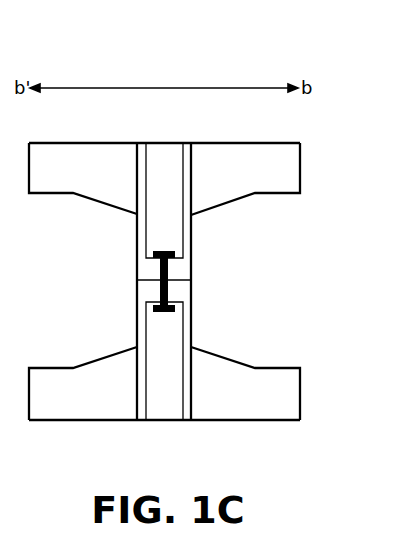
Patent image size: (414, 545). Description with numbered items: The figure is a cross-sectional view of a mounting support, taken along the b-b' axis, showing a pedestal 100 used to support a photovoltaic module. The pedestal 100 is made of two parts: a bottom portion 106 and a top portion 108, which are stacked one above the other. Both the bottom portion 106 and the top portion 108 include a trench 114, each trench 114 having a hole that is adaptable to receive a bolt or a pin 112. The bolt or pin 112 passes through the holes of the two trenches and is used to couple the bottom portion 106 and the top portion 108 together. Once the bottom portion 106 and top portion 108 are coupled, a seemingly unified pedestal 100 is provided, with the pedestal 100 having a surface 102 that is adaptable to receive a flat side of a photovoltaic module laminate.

The pedestal 100 is at (225, 73).
The surface 102 is at (215, 142).
The bottom portion 106 is at (137, 320).
The top portion 108 is at (137, 245).
The bolt or pin 112 is at (177, 252).
The trench 114 is at (177, 201).